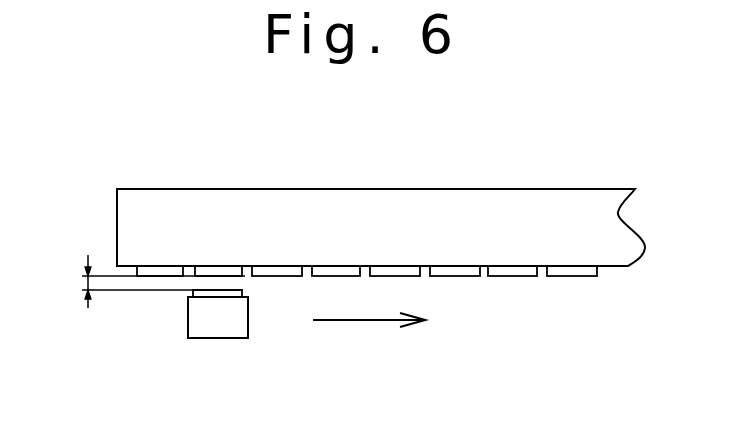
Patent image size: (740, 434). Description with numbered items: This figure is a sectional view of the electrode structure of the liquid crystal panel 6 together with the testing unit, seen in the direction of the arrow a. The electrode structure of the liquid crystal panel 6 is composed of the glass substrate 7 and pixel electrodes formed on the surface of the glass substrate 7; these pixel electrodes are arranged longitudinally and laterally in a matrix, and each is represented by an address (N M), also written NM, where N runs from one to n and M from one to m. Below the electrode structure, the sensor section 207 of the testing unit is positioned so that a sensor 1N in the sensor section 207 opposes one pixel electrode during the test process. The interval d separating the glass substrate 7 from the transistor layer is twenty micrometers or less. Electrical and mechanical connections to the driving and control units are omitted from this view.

The liquid crystal panel 6 is at (381, 185).
The glass substrate 7 is at (355, 200).
The pixel electrode address (N,M) N M is at (367, 187).
The pixel electrode address (N,M) NM is at (215, 266).
The sensor 1N is at (203, 293).
The sensor section 207 is at (232, 328).
The interval d is at (154, 281).
The arrow a is at (369, 328).